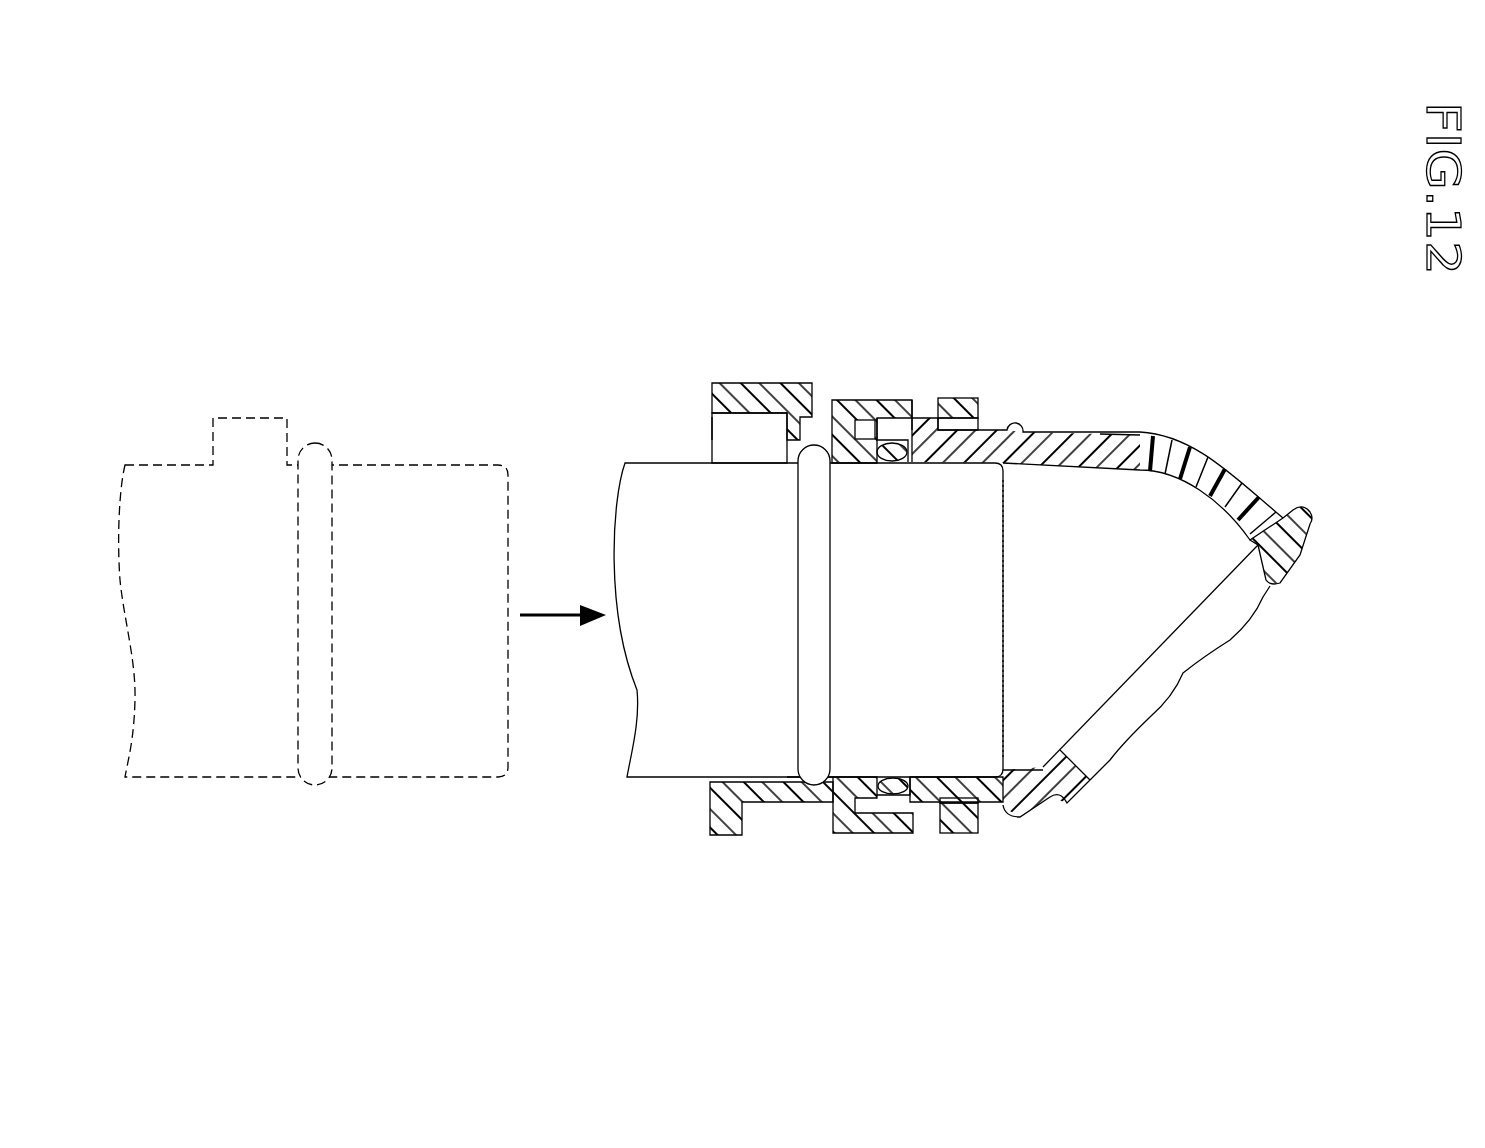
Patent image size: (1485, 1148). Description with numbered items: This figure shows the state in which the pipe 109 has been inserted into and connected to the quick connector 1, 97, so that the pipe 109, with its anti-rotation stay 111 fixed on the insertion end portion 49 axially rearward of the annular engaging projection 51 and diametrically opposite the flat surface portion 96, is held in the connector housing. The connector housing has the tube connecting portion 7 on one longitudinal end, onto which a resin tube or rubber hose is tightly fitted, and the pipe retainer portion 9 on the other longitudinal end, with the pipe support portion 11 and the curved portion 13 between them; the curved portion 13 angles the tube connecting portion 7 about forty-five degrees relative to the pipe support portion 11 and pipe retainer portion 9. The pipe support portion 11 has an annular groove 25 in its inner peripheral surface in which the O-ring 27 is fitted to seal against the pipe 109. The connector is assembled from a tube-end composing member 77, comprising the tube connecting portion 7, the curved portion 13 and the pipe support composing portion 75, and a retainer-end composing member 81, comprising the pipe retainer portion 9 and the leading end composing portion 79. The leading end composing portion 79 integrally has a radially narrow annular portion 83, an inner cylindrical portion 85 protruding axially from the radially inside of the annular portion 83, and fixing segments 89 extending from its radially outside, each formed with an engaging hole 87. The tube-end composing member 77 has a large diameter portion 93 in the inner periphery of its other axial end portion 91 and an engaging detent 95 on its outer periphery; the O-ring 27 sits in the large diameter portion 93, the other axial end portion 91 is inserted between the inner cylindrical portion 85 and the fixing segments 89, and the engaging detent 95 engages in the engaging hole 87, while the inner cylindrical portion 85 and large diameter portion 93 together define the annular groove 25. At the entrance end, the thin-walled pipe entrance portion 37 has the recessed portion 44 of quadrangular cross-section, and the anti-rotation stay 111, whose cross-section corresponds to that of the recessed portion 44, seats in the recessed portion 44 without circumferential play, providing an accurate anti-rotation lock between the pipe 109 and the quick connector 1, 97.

The quick connector 1 is at (1168, 268).
The quick connector 97 is at (738, 586).
The tube connecting portion 7 is at (1290, 560).
The pipe retainer portion 9 is at (774, 832).
The pipe support portion 11 is at (1010, 425).
The curved portion 13 is at (1222, 490).
The annular groove 25 is at (907, 465).
The O-ring 27 is at (893, 463).
The pipe entrance portion 37 is at (723, 838).
The recessed portion 44 is at (750, 438).
The insertion end portion 49 is at (985, 606).
The annular engaging projection 51 is at (810, 467).
The pipe support composing portion 75 is at (962, 838).
The tube-end composing member 77 is at (1188, 420).
The leading end composing portion 79 is at (838, 838).
The retainer-end composing member 81 is at (746, 368).
The annular portion 83 is at (830, 395).
The inner cylindrical portion 85 is at (858, 398).
The engaging hole 87 is at (930, 395).
The fixing segment 89 is at (901, 398).
The other axial end portion 91 is at (877, 398).
The large diameter portion 93 is at (891, 783).
The engaging detent 95 is at (930, 810).
The flat surface portion 96 is at (822, 783).
The pipe 109 is at (612, 460).
The anti-rotation stay 111 is at (712, 428).